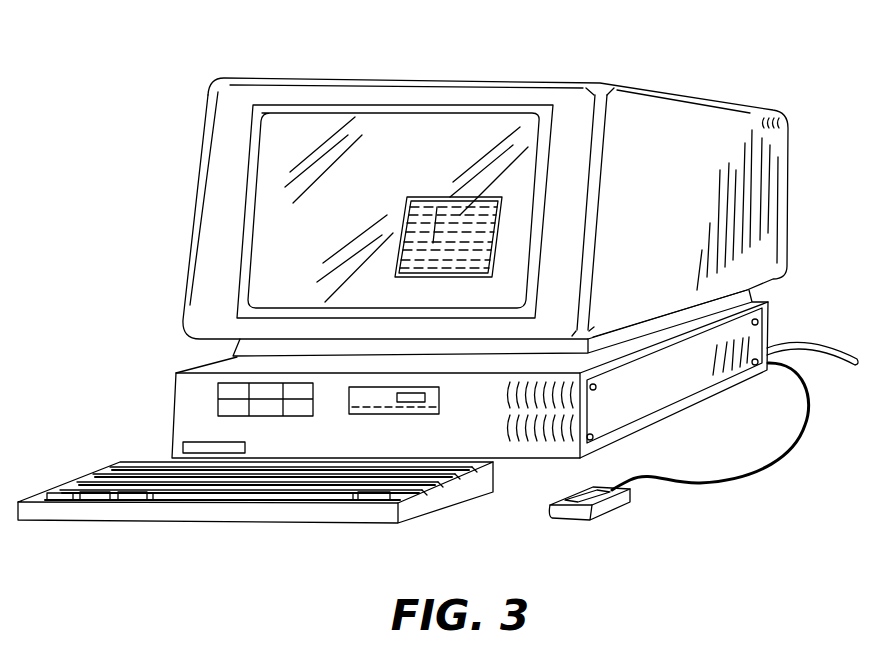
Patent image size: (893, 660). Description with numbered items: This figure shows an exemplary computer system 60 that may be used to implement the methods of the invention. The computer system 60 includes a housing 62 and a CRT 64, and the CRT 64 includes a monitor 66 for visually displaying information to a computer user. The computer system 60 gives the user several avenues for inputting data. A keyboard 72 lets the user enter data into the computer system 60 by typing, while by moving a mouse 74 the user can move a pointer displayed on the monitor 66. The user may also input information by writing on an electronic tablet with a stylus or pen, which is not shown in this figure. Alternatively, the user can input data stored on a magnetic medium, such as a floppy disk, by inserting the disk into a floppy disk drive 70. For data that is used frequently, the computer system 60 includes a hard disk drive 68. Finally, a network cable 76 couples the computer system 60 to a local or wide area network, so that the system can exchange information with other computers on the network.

The computer system 60 is at (200, 76).
The housing 62 is at (702, 380).
The CRT 64 is at (218, 133).
The monitor 66 is at (263, 228).
The hard disk drive 68 is at (363, 398).
The floppy disk drive 70 is at (218, 399).
The keyboard 72 is at (65, 512).
The mouse 74 is at (605, 505).
The network cable 76 is at (827, 345).